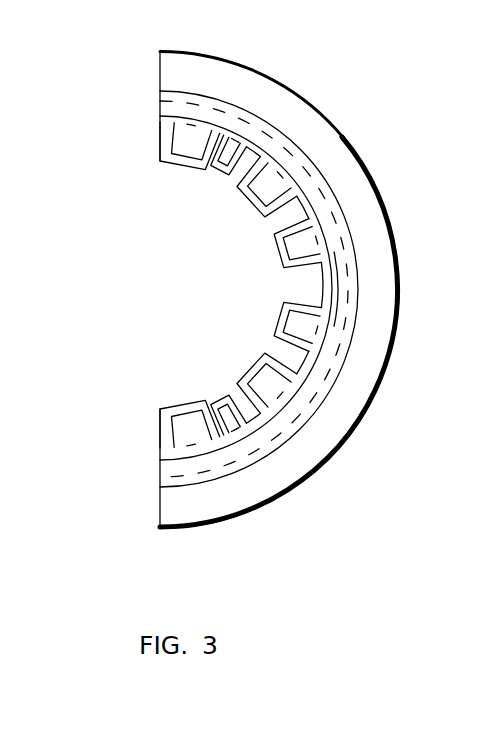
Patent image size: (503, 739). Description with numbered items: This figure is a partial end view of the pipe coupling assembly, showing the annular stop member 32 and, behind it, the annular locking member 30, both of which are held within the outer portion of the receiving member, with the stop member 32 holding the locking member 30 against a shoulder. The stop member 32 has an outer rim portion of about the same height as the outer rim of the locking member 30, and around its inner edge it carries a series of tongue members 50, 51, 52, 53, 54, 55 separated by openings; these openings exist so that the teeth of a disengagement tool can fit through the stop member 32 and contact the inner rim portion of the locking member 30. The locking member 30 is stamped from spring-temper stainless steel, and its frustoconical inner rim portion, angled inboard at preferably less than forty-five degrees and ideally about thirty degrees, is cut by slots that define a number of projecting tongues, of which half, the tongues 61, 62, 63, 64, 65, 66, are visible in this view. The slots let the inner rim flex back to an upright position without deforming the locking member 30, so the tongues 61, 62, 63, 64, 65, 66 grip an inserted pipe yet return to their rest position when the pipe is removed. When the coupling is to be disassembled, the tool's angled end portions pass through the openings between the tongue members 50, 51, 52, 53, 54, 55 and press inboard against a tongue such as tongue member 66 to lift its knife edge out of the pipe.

The annular locking member 30 is at (160, 412).
The annular stop member 32 is at (185, 60).
The tongue member 50 is at (192, 140).
The tongue member 51 is at (262, 185).
The tongue member 52 is at (300, 253).
The tongue member 53 is at (300, 317).
The tongue member 54 is at (260, 387).
The tongue member 55 is at (192, 430).
The tongue 61 is at (183, 166).
The tongue 62 is at (240, 198).
The tongue 63 is at (283, 255).
The tongue 64 is at (283, 316).
The tongue 65 is at (243, 378).
The tongue member 66 is at (183, 412).